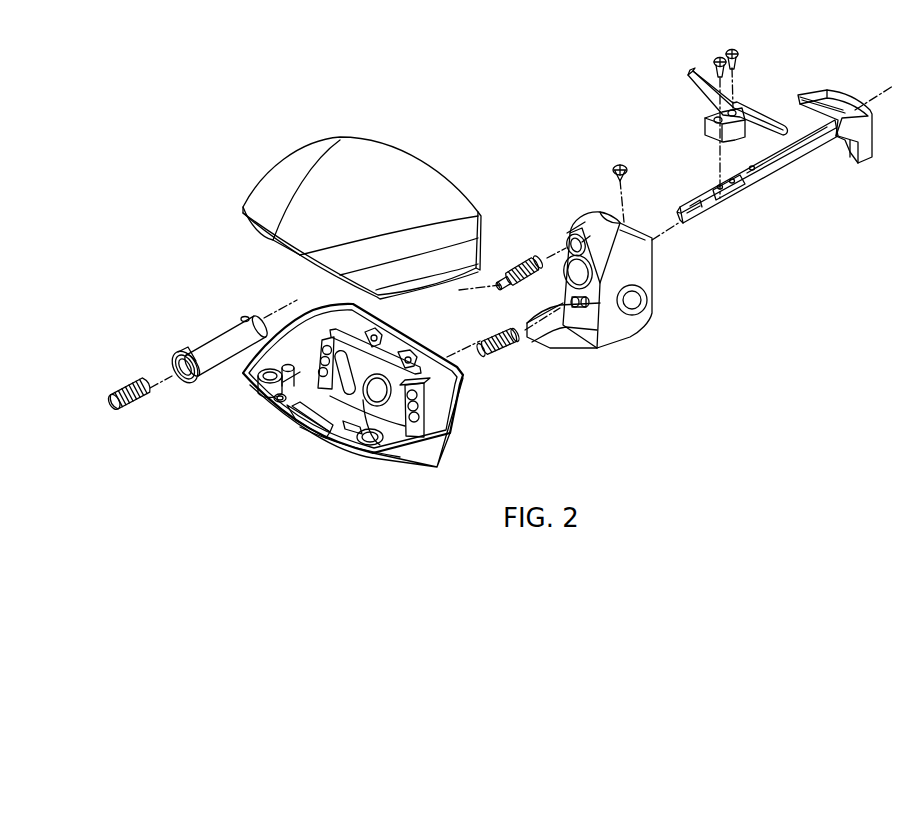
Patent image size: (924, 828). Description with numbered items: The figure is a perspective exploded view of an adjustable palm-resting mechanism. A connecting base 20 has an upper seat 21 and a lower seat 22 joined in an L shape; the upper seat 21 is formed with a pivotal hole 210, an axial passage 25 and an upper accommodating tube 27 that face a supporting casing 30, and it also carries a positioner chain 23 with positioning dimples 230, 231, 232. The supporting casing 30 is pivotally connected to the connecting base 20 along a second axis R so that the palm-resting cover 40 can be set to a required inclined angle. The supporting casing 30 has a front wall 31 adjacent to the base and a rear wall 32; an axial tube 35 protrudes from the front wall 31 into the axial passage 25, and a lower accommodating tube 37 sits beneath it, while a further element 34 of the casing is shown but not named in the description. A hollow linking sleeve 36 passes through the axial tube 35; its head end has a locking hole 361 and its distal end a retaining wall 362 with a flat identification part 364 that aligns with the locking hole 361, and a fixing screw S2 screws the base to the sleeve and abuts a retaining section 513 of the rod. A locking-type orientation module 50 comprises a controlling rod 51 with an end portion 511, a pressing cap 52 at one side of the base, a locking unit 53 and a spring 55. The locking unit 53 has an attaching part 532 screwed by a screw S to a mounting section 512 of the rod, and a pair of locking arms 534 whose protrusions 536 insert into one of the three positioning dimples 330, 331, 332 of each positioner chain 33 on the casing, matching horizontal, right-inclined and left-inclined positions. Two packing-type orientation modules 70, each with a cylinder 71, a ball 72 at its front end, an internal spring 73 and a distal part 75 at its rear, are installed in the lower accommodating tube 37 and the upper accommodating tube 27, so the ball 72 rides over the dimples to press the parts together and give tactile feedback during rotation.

The connecting base 20 is at (613, 297).
The upper seat 21 is at (640, 254).
The lower seat 22 is at (615, 327).
The positioner chain 23 is at (602, 358).
The axial passage 25 is at (586, 277).
The upper accommodating tube 27 is at (583, 236).
The supporting casing 30 is at (445, 460).
The front wall 31 is at (405, 362).
The rear wall 32 is at (327, 443).
The positioner chain 33 is at (320, 385).
The slot 34 is at (300, 418).
The axial tube 35 is at (380, 380).
The linking sleeve 36 is at (226, 325).
The lower accommodating tube 37 is at (356, 432).
The palm-resting cover 40 is at (412, 160).
The locking-type orientation module 50 is at (774, 134).
The controlling rod 51 is at (757, 180).
The pressing cap 52 is at (846, 102).
The locking unit 53 is at (724, 89).
The spring 55 is at (130, 383).
The packing-type orientation module 70 is at (512, 307).
The cylinder 71 is at (512, 270).
The ball 72 is at (501, 285).
The spring 73 is at (503, 316).
The distal part 75 is at (479, 346).
The pivotal hole 210 is at (642, 300).
The positioning dimple 230 is at (582, 308).
The positioning dimple 231 is at (590, 310).
The positioning dimple 232 is at (577, 308).
The positioning dimple 330 is at (275, 400).
The positioning dimple 331 is at (265, 380).
The positioning dimple 332 is at (296, 416).
The locking hole 361 is at (245, 315).
The retaining wall 362 is at (184, 378).
The identification part 364 is at (186, 352).
The bar end 511 is at (691, 203).
The mounting section 512 is at (735, 197).
The retaining section 513 is at (817, 140).
The attaching part 532 is at (705, 128).
The locking arms 534 is at (705, 102).
The protrusion 536 is at (693, 71).
The screw S is at (731, 48).
The fixing screw S2 is at (619, 163).
The second axis R is at (886, 86).